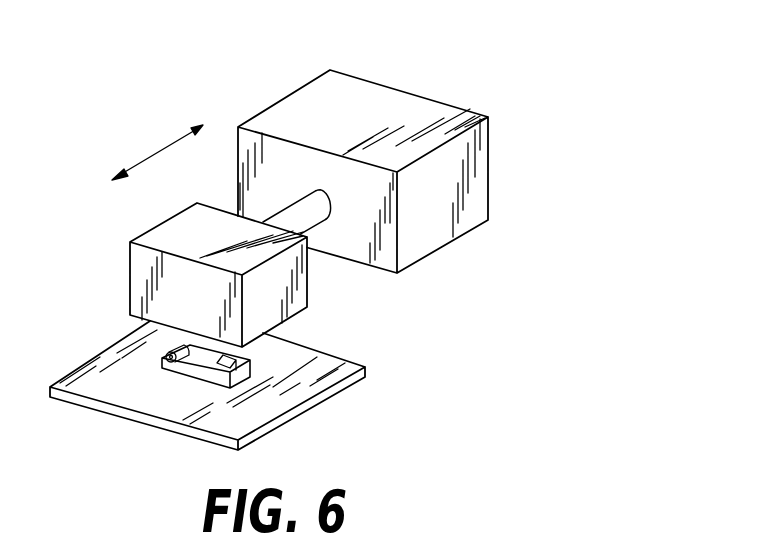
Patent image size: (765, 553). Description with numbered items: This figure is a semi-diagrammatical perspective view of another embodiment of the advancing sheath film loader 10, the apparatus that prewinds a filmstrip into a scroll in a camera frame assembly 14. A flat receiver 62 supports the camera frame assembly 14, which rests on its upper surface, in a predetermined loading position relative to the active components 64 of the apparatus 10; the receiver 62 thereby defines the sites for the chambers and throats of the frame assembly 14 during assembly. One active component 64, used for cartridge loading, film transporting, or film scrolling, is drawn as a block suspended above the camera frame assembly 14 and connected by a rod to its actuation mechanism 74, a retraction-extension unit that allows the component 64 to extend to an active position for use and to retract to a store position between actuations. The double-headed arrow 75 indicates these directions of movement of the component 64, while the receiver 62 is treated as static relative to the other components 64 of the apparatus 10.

The advancing sheath film loader 10 is at (314, 233).
The camera frame assembly 14 is at (240, 382).
The receiver 62 is at (333, 355).
The active components 64 is at (152, 228).
The actuation mechanism 74 is at (488, 177).
The double-headed arrow 75 is at (168, 145).